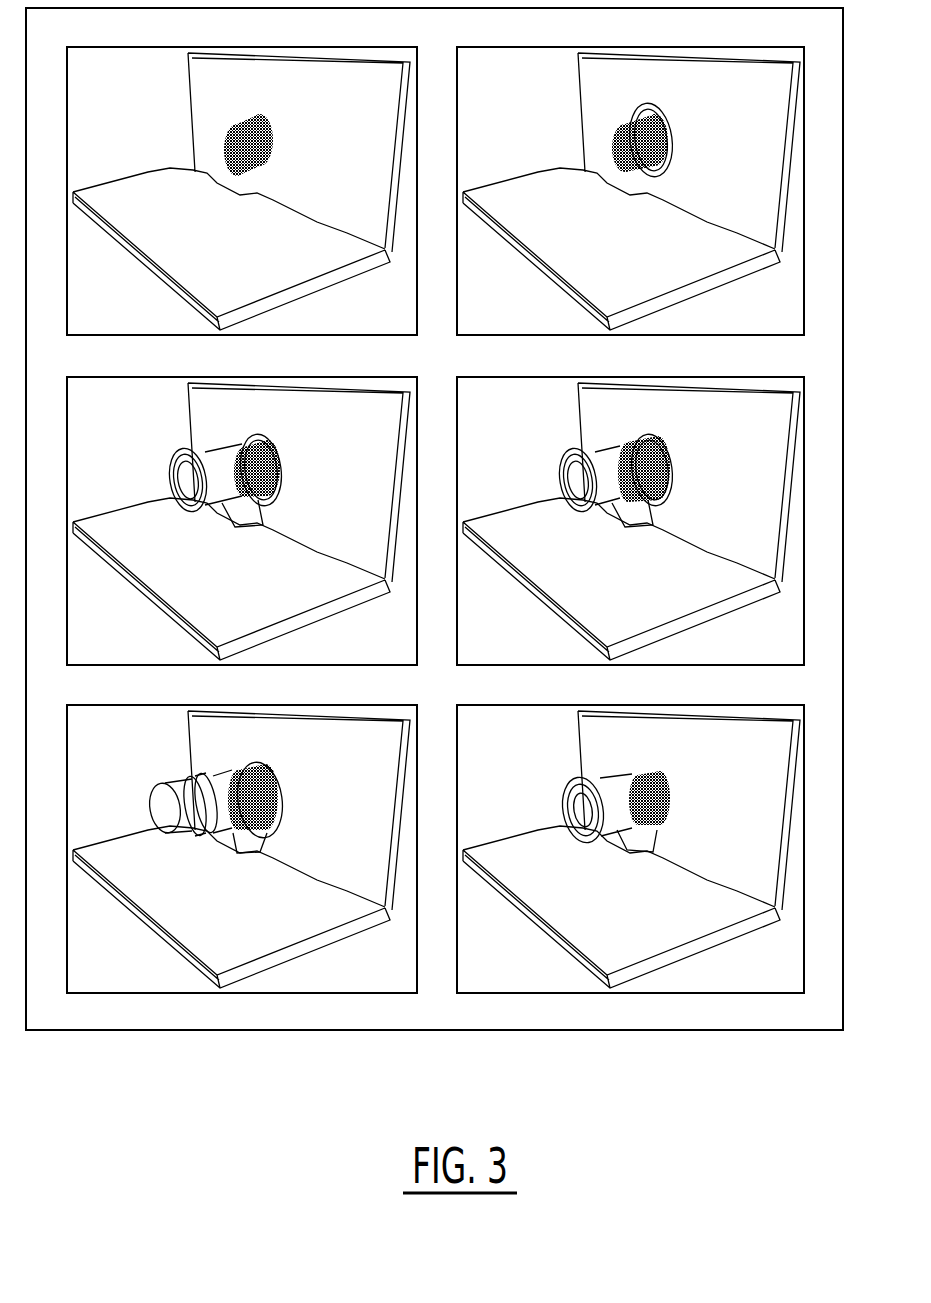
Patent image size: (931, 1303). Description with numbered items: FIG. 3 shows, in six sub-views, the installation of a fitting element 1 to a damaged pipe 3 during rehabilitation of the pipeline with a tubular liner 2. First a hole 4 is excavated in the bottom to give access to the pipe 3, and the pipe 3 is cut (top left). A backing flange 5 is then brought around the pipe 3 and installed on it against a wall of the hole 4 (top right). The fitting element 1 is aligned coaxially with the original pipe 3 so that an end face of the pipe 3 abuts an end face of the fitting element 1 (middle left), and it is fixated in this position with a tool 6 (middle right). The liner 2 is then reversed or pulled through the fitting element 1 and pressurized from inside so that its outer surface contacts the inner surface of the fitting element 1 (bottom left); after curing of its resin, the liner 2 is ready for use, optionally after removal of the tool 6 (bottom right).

The fitting element 1 is at (220, 460).
The liner 2 is at (163, 800).
The pipe 3 is at (252, 130).
The hole 4 is at (337, 193).
The backing flange 5 is at (672, 140).
The tool 6 is at (630, 492).